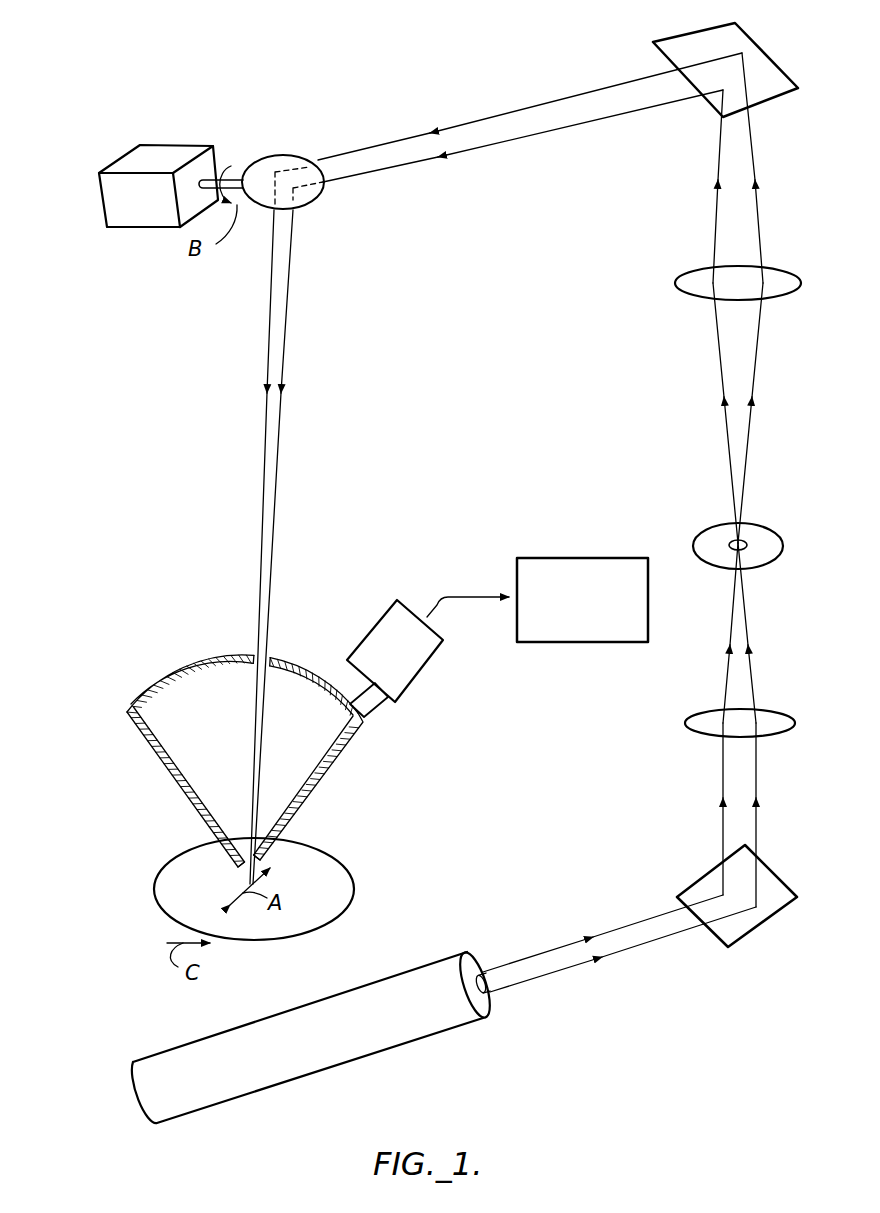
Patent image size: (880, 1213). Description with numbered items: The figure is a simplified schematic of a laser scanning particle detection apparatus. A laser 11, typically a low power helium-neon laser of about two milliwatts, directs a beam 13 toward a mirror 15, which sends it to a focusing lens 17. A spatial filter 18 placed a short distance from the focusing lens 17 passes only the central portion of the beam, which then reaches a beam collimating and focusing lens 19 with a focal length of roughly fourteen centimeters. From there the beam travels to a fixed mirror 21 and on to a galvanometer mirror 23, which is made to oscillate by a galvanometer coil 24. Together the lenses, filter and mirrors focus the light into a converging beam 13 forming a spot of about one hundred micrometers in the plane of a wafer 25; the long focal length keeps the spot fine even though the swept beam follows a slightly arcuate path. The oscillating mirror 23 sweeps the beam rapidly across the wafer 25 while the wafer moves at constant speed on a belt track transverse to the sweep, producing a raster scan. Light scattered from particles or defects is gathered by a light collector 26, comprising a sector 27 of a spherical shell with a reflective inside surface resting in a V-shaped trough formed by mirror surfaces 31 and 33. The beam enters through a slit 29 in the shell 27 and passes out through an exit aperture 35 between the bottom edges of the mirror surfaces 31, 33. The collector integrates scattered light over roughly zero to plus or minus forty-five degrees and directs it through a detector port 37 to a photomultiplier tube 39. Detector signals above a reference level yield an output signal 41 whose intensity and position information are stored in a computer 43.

The laser 11 is at (453, 1028).
The beam 13 is at (563, 962).
The mirror 15 is at (790, 887).
The focusing lens 17 is at (782, 713).
The spatial filter 18 is at (768, 525).
The beam collimating and focusing lens 19 is at (780, 268).
The fixed mirror 21 is at (772, 60).
The galvanometer mirror 23 is at (275, 152).
The galvanometer coil 24 is at (168, 143).
The wafer 25 is at (347, 880).
The light collector 26 is at (202, 736).
The sector of a spherical shell 27 is at (180, 670).
The slit 29 is at (253, 650).
The mirror surface 31 is at (327, 778).
The mirror surface 33 is at (168, 772).
The exit aperture 35 is at (245, 855).
The detector port 37 is at (377, 700).
The photomultiplier tube 39 is at (417, 682).
The output signal 41 is at (458, 595).
The computer 43 is at (547, 558).